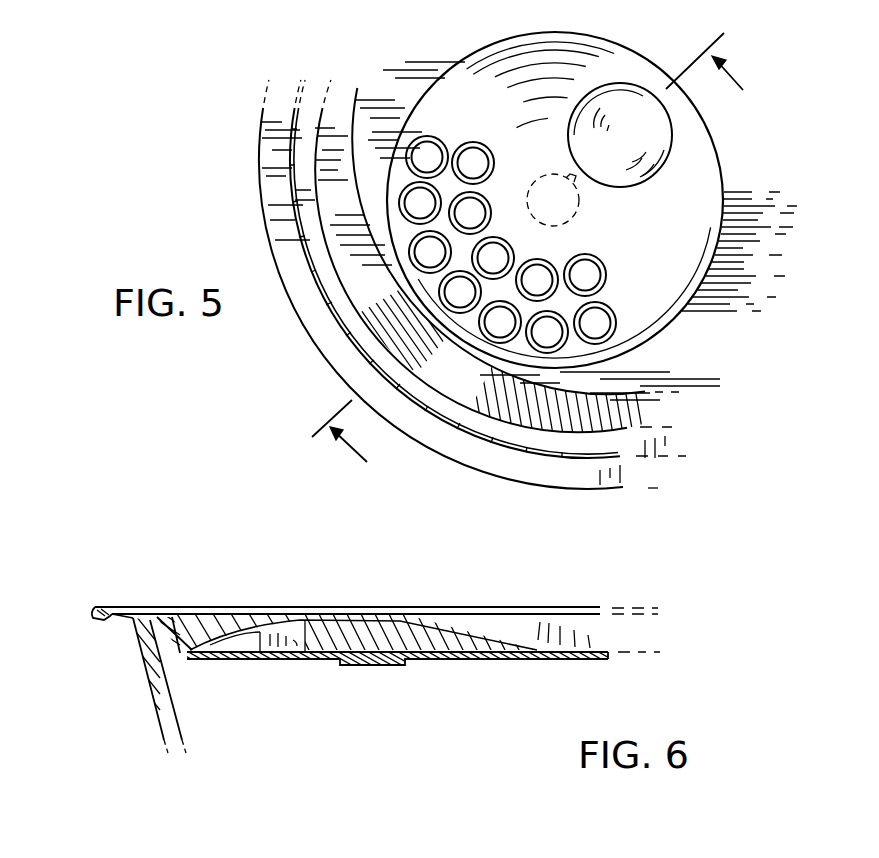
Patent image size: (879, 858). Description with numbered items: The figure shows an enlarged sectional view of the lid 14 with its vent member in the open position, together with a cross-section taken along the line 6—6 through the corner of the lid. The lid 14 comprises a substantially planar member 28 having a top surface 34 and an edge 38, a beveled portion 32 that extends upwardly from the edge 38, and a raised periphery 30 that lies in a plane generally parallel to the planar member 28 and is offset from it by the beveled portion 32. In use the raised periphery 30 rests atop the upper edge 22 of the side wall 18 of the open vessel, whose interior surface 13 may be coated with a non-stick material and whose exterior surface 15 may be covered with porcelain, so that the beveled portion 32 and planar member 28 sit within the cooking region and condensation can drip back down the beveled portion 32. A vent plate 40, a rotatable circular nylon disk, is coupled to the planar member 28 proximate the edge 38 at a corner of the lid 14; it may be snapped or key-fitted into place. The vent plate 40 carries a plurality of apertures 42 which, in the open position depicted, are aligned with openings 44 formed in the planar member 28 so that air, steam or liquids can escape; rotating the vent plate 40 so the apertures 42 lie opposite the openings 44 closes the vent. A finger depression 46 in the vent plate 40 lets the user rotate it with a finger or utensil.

In FIG. 5, the section line 6— 6 is at (534, 255).
In FIG. 6, the interior surface 13 is at (185, 728).
In FIG. 6, the lid 14 is at (107, 600).
In FIG. 6, the exterior surface 15 is at (165, 747).
In FIG. 6, the side wall 18 is at (160, 706).
In FIG. 6, the upper edge 22 is at (135, 627).
In FIG. 6, the substantially planar member 28 is at (612, 661).
In FIG. 5, the raised periphery 30 is at (628, 480).
In FIG. 6, the raised periphery 30 is at (585, 608).
In FIG. 5, the beveled portion 32 is at (682, 417).
In FIG. 6, the beveled portion 32 is at (172, 645).
In FIG. 5, the top surface 34 is at (727, 355).
In FIG. 5, the edge 38 is at (654, 389).
In FIG. 5, the vent plate 40 is at (724, 178).
In FIG. 6, the vent plate 40 is at (473, 662).
In FIG. 5, the apertures 42 is at (493, 142).
In FIG. 6, the apertures 42 is at (295, 648).
In FIG. 5, the openings 44 is at (471, 163).
In FIG. 5, the finger depression 46 is at (660, 138).
In FIG. 6, the finger depression 46 is at (486, 630).